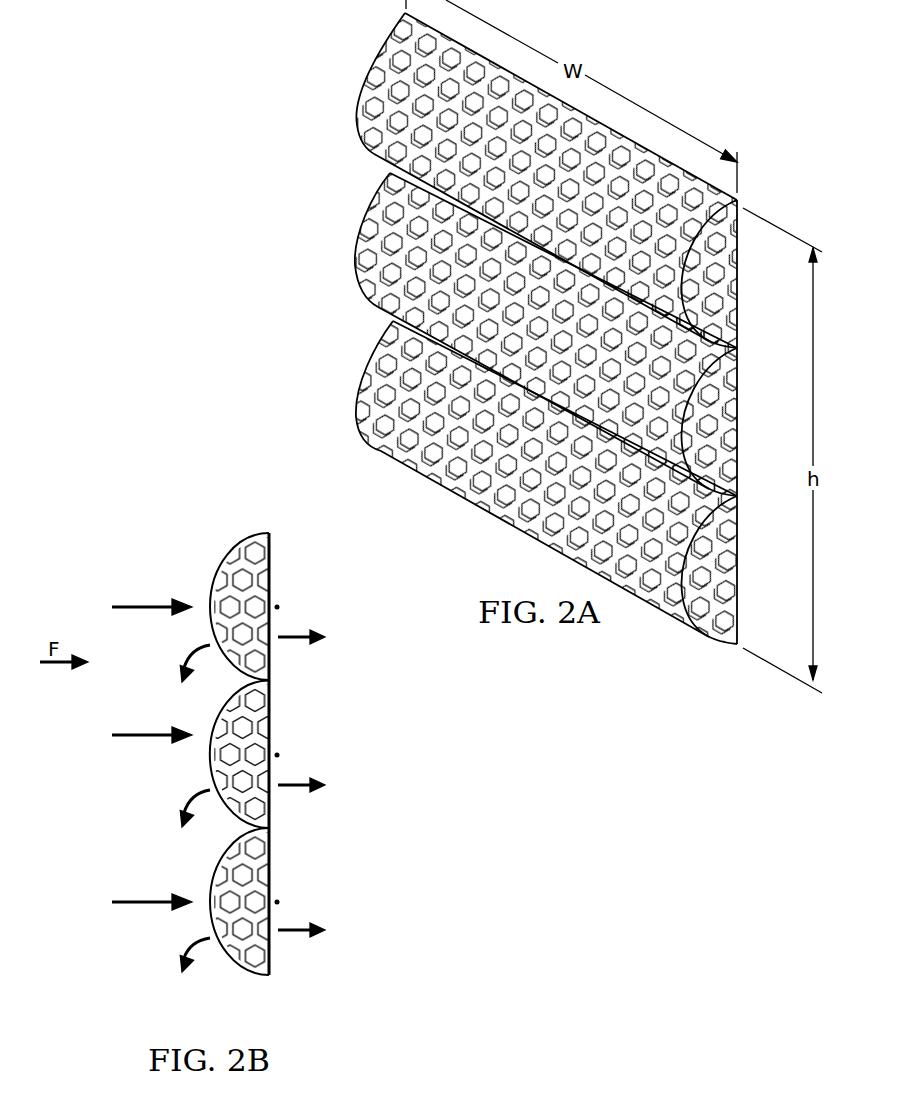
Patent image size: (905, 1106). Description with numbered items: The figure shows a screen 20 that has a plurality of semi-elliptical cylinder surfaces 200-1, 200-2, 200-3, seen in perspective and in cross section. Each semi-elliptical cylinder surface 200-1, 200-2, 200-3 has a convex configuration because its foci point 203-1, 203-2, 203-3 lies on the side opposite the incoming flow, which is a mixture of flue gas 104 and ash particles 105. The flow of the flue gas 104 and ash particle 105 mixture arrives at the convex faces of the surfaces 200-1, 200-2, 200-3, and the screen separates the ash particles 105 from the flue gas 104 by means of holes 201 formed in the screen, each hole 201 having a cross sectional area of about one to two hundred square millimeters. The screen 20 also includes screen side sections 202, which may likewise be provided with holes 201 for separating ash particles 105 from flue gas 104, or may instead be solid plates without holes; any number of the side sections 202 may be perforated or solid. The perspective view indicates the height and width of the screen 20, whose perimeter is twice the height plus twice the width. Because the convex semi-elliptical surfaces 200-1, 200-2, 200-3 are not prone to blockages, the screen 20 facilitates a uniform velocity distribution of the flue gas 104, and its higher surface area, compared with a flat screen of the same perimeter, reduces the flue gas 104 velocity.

In FIG. 2A, the screen 20 is at (525, 328).
In FIG. 2B, the screen 20 is at (213, 775).
In FIG. 2A, the semi-elliptical cylinder surface 200-1 is at (336, 108).
In FIG. 2B, the semi-elliptical cylinder surface 200-1 is at (210, 551).
In FIG. 2A, the semi-elliptical cylinder surface 200-2 is at (336, 258).
In FIG. 2B, the semi-elliptical cylinder surface 200-2 is at (180, 762).
In FIG. 2A, the semi-elliptical cylinder surface 200-3 is at (336, 412).
In FIG. 2B, the semi-elliptical cylinder surface 200-3 is at (208, 970).
In FIG. 2A, the holes 201 is at (387, 72).
In FIG. 2A, the screen side sections 202 is at (728, 318).
In FIG. 2B, the screen side sections 202 is at (272, 553).
In FIG. 2B, the foci point 203-1 is at (279, 607).
In FIG. 2B, the foci point 203-2 is at (279, 755).
In FIG. 2B, the foci point 203-3 is at (279, 902).
In FIG. 2B, the flue gas 104 is at (140, 607).
In FIG. 2B, the ash particles 105 is at (178, 645).